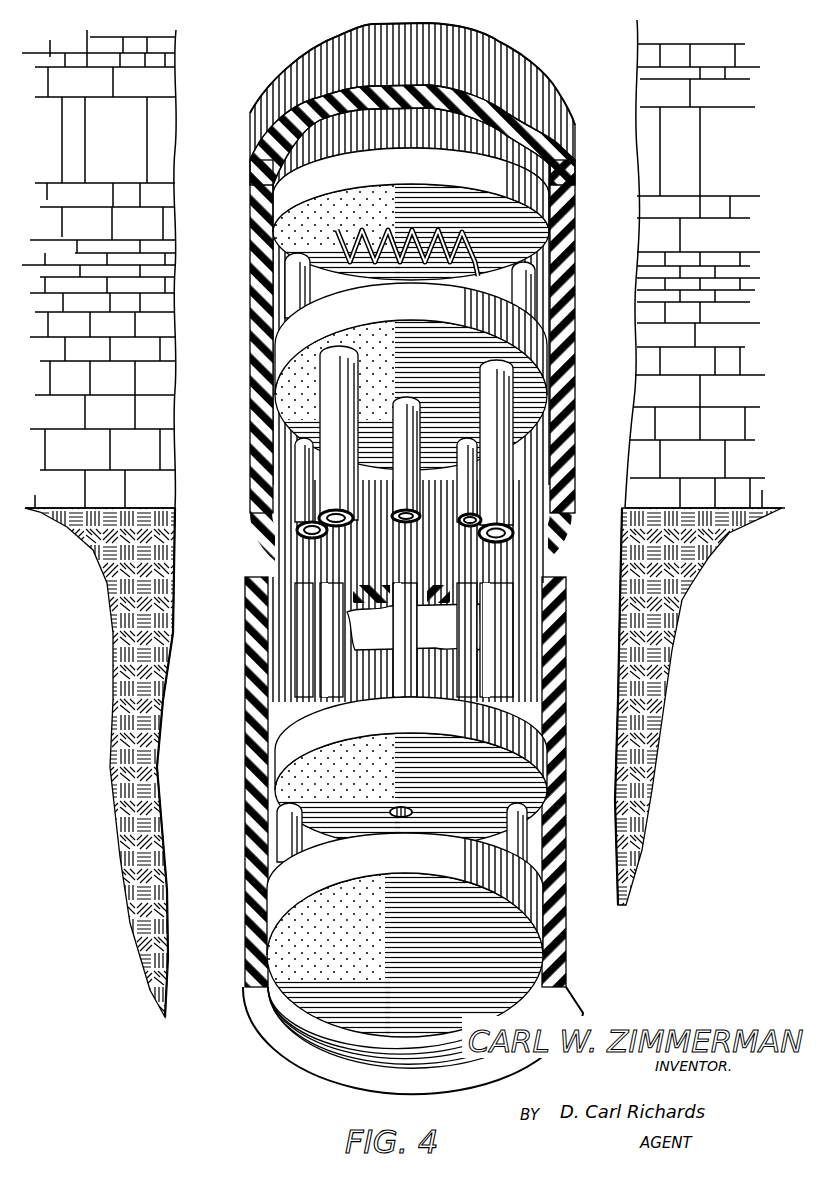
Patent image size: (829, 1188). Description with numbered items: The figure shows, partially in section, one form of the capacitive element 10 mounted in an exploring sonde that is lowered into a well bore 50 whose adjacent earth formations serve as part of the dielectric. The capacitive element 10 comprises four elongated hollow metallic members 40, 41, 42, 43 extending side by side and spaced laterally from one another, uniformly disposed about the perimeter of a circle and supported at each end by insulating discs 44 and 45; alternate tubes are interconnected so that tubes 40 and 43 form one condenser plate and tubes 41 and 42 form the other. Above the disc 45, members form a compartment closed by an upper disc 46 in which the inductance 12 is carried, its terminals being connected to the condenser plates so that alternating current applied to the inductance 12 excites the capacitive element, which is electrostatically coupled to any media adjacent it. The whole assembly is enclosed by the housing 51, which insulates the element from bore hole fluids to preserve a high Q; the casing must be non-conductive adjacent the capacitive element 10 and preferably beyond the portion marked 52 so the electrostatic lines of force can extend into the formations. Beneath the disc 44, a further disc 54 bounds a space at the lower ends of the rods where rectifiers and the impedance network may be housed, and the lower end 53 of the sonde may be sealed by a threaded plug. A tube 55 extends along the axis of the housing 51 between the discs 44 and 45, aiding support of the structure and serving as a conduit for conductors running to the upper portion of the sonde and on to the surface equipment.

The capacitive element 10 is at (241, 556).
The inductance 12 is at (380, 232).
The metallic member 40 is at (531, 582).
The metallic member 41 is at (462, 616).
The metallic member 42 is at (344, 615).
The metallic member 43 is at (297, 597).
The insulating disc 44 is at (346, 737).
The insulating disc 45 is at (346, 324).
The upper disc 46 is at (346, 195).
The well bore 50 is at (236, 52).
The housing 51 is at (564, 283).
The upper portion of sonde 52 is at (593, 118).
The lower end 53 is at (564, 963).
The disc 54 is at (351, 869).
The tube 55 is at (430, 516).